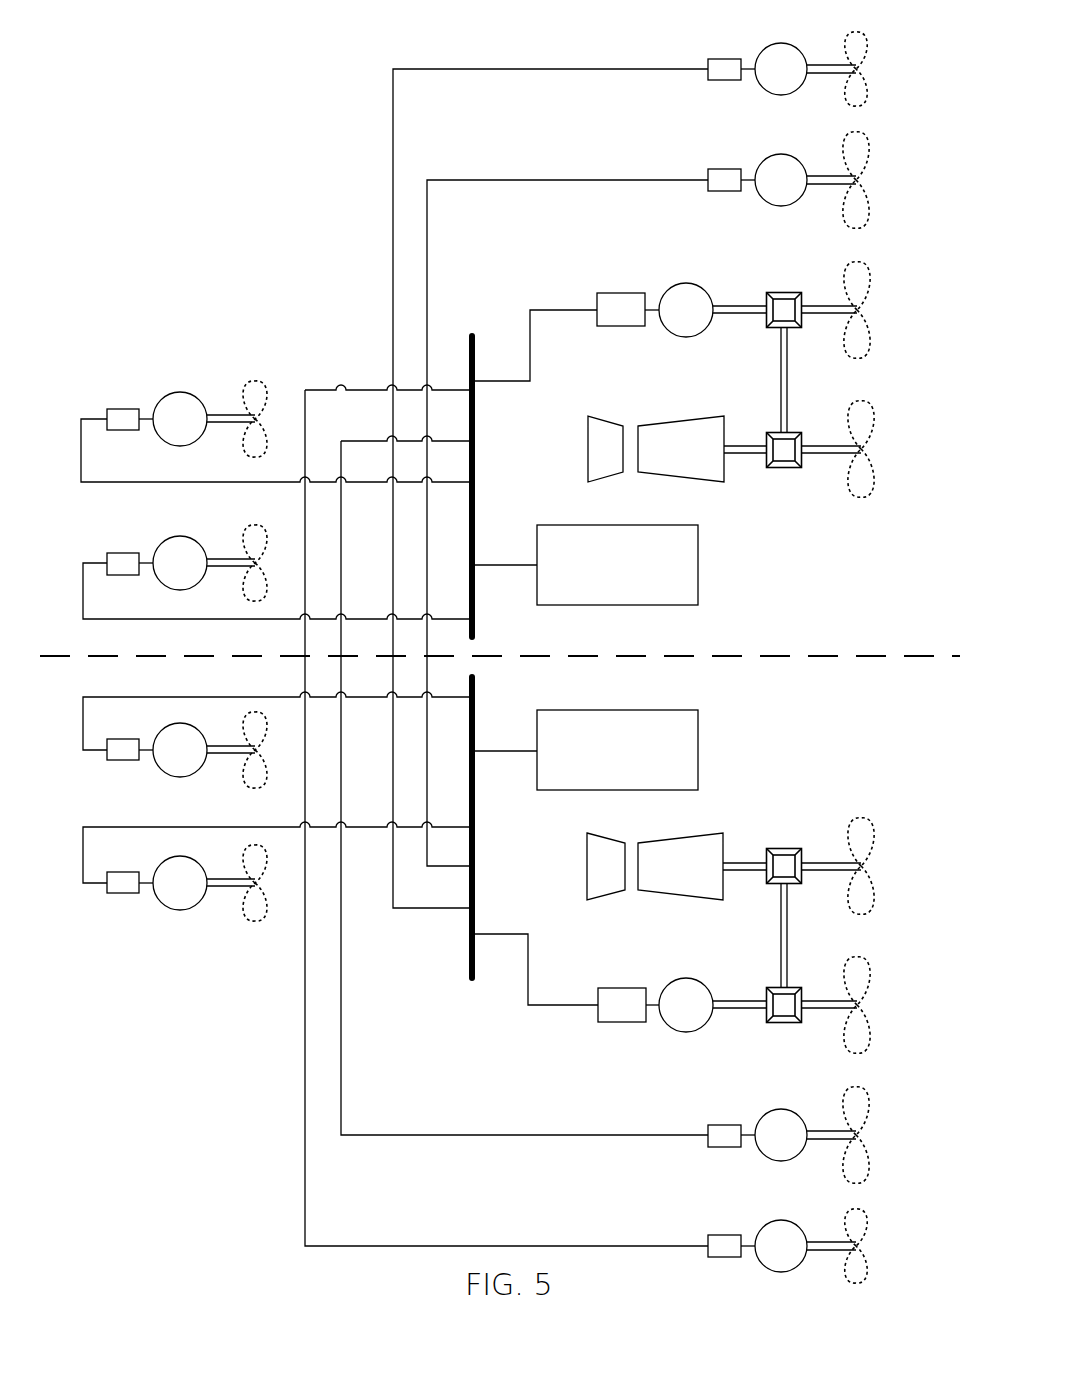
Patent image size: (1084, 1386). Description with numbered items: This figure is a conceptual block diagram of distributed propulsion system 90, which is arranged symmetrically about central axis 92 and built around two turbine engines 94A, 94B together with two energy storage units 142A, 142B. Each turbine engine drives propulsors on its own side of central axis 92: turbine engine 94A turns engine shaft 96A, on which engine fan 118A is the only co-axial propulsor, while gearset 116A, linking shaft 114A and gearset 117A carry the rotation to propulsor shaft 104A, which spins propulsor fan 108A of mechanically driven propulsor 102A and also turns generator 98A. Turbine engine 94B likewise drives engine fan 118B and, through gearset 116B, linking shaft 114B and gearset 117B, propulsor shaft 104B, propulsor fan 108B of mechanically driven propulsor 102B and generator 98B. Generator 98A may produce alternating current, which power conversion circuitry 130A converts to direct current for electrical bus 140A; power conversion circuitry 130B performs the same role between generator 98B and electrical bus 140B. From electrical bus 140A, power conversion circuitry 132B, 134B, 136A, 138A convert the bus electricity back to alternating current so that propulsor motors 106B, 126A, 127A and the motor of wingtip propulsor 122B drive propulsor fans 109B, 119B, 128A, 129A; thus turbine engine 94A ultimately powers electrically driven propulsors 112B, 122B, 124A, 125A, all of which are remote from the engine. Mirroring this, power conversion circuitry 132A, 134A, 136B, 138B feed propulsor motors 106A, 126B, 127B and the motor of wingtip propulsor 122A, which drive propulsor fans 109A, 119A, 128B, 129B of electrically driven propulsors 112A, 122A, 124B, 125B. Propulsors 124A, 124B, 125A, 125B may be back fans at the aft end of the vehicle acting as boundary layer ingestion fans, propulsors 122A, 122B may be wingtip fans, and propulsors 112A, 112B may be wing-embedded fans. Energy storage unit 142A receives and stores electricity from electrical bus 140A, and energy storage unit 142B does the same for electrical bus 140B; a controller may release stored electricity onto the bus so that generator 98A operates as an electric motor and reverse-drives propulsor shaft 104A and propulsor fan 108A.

The distributed propulsion system 90 is at (210, 122).
The central axis 92 is at (882, 633).
The turbine engine 94A is at (596, 480).
The turbine engine 94B is at (598, 838).
The engine shaft 96A is at (829, 457).
The generator 98A is at (690, 337).
The generator 98B is at (692, 979).
The mechanically driven propulsor 102A is at (736, 537).
The mechanically driven propulsor 102B is at (724, 933).
The propulsor shaft 104A is at (728, 304).
The propulsor shaft 104B is at (820, 878).
The propulsor motor 106A is at (778, 206).
The propulsor motor 106B is at (791, 1162).
The propulsor fan 108A is at (870, 280).
The propulsor fan 108B is at (862, 962).
The propulsor fan 109A is at (860, 140).
The propulsor fan 109B is at (862, 1088).
The electrically driven propulsor 112A is at (713, 180).
The electrically driven propulsor 112B is at (725, 1130).
The linking shaft 114A is at (781, 390).
The linking shaft 114B is at (781, 956).
The gearset 116A is at (791, 469).
The gearset 116B is at (796, 848).
The gearset 117A is at (783, 292).
The gearset 117B is at (793, 1023).
The engine fan 118A is at (868, 408).
The engine fan 118B is at (868, 820).
The propulsor fan 119A is at (857, 32).
The propulsor fan 119B is at (862, 1216).
The electrically driven propulsor 122A is at (713, 53).
The electrically driven propulsor 122B is at (722, 1238).
The electrically driven propulsor 124A is at (258, 569).
The electrically driven propulsor 124B is at (257, 738).
The electrically driven propulsor 125A is at (260, 385).
The electrically driven propulsor 125B is at (257, 930).
The propulsor motor 126A is at (180, 536).
The propulsor motor 126B is at (190, 777).
The propulsor motor 127A is at (185, 392).
The propulsor motor 127B is at (200, 910).
The propulsor fan 128A is at (257, 526).
The propulsor fan 128B is at (246, 770).
The propulsor fan 129A is at (258, 382).
The propulsor fan 129B is at (257, 920).
The power conversion circuitry 130A is at (612, 293).
The power conversion circuitry 130B is at (610, 1022).
The power conversion circuitry 132A is at (720, 169).
The power conversion circuitry 132B is at (720, 1125).
The power conversion circuitry 134A is at (718, 59).
The power conversion circuitry 134B is at (720, 1235).
The power conversion circuitry 136A is at (124, 553).
The power conversion circuitry 136B is at (123, 760).
The power conversion circuitry 138A is at (124, 409).
The power conversion circuitry 138B is at (123, 893).
The electrical bus 140A is at (474, 438).
The electrical bus 140B is at (470, 965).
The energy storage unit 142A is at (644, 591).
The energy storage unit 142B is at (644, 776).